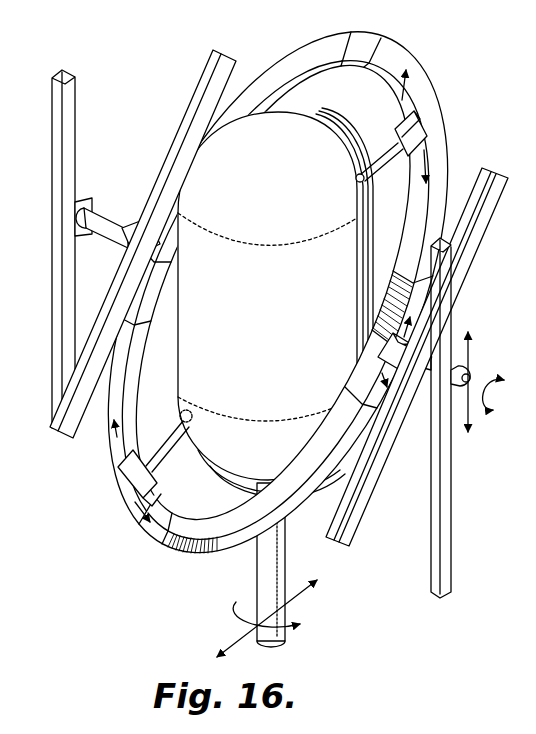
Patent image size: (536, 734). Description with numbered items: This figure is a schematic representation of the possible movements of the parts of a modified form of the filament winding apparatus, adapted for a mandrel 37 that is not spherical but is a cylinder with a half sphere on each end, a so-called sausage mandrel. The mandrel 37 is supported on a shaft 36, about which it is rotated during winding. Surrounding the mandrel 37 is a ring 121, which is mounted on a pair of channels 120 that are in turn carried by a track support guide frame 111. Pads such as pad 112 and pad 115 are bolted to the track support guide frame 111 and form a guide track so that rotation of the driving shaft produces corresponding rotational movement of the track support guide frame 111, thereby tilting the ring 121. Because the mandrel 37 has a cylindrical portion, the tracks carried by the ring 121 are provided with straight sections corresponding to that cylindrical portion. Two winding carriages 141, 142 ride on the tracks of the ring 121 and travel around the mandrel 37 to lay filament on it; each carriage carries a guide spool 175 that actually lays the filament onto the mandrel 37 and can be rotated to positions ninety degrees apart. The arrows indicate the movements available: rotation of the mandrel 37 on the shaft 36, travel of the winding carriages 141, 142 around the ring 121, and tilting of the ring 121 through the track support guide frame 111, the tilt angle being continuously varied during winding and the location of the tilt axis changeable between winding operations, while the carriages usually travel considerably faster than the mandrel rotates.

The shaft 36 is at (262, 571).
The mandrel 37 is at (275, 302).
The track support guide frame 111 is at (228, 50).
The pad 112 is at (431, 347).
The pad 115 is at (486, 177).
The channel 120 is at (139, 232).
The ring 121 is at (308, 52).
The winding carriage 141 is at (397, 132).
The winding carriage 142 is at (159, 474).
The guide spool 175 is at (355, 182).